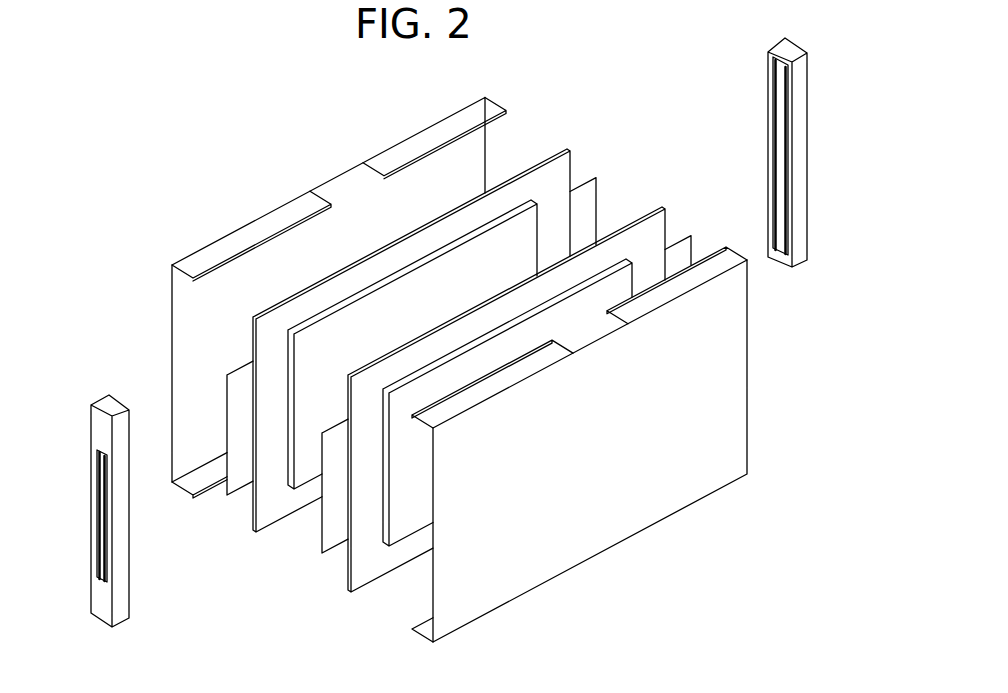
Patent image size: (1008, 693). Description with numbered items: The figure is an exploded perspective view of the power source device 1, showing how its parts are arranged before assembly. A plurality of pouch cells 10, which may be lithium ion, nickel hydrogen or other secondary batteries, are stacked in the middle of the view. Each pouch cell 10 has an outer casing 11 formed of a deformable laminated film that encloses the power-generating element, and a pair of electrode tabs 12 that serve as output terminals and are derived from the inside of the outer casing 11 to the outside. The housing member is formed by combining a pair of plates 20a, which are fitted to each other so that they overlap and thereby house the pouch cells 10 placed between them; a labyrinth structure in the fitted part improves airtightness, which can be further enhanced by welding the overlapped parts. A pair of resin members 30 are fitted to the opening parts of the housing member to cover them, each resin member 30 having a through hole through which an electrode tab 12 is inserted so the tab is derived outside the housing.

The power source device 1 is at (757, 603).
The pouch cell 10 is at (576, 107).
The outer casing 11 is at (281, 526).
The electrode tab 12 is at (235, 500).
The plate 20a is at (170, 312).
The resin member 30 is at (96, 428).